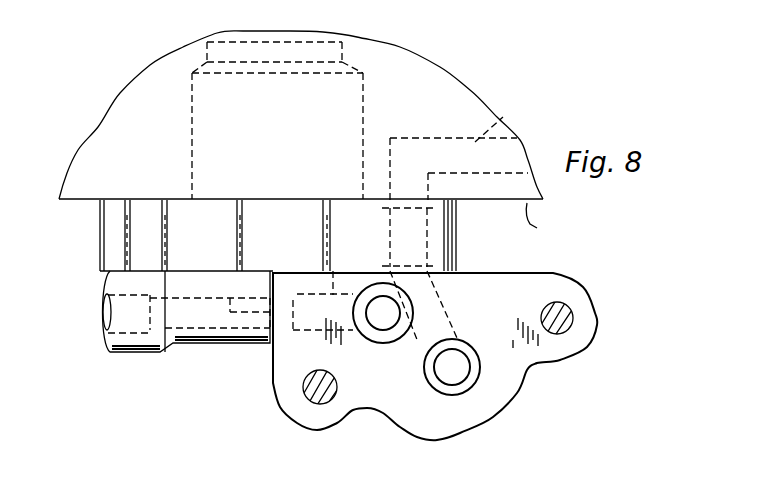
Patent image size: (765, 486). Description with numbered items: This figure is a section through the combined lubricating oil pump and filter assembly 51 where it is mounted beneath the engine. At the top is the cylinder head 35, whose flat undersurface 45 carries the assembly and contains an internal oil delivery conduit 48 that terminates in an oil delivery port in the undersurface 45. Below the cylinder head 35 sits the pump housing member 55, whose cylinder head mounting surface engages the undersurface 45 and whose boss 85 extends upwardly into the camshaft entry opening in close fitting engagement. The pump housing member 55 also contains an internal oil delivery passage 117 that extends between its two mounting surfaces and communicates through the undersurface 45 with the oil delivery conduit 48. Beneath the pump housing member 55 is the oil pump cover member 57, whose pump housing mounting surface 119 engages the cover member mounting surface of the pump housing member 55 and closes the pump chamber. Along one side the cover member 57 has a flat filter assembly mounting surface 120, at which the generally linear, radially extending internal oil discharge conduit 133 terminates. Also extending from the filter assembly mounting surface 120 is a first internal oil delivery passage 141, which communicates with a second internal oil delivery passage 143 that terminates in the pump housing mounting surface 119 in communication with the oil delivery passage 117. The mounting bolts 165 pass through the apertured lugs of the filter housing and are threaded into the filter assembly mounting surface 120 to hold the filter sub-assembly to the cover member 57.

The cylinder head 35 is at (425, 75).
The internal oil delivery conduit 48 is at (465, 151).
The boss 85 is at (207, 113).
The combined lubricating oil pump and filter assembly 51 is at (187, 380).
The pump housing member 55 is at (102, 223).
The internal oil delivery passage 117 is at (412, 228).
The pump housing mounting surface 119 is at (450, 252).
The flat undersurface 45 is at (543, 221).
The oil pump cover member 57 is at (575, 288).
The mounting bolts 165 is at (315, 385).
The second internal oil delivery passage 143 is at (425, 291).
The first internal oil delivery passage 141 is at (447, 390).
The filter assembly mounting surface 120 is at (522, 355).
The internal oil discharge conduit 133 is at (298, 295).